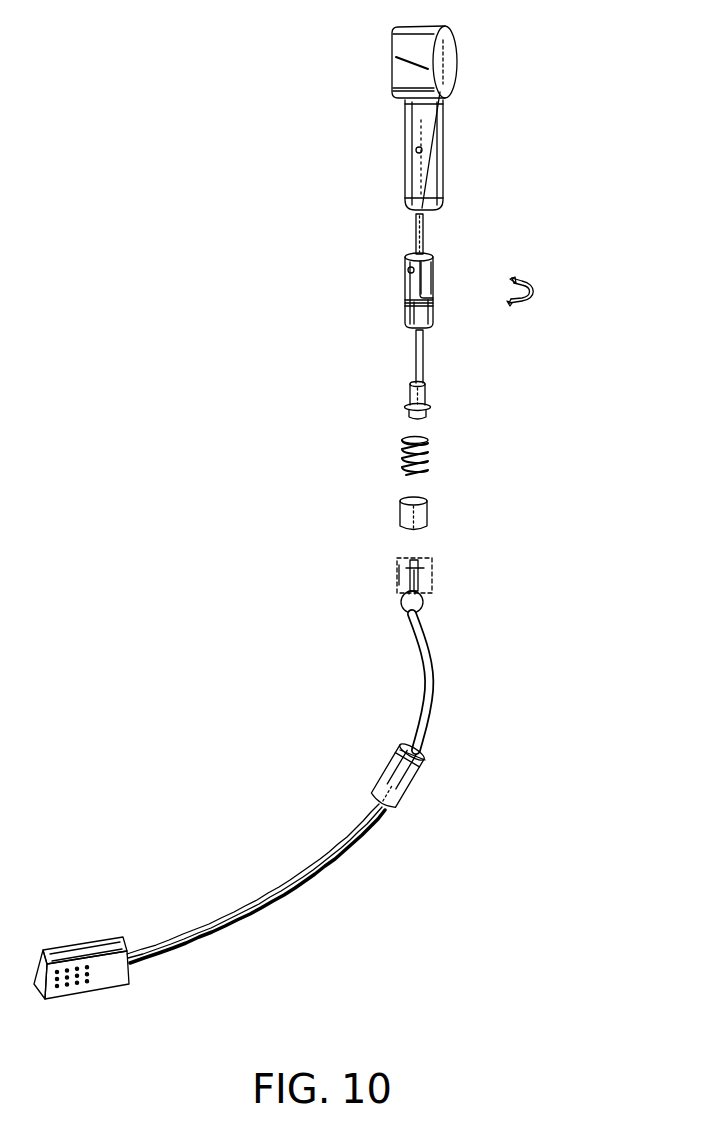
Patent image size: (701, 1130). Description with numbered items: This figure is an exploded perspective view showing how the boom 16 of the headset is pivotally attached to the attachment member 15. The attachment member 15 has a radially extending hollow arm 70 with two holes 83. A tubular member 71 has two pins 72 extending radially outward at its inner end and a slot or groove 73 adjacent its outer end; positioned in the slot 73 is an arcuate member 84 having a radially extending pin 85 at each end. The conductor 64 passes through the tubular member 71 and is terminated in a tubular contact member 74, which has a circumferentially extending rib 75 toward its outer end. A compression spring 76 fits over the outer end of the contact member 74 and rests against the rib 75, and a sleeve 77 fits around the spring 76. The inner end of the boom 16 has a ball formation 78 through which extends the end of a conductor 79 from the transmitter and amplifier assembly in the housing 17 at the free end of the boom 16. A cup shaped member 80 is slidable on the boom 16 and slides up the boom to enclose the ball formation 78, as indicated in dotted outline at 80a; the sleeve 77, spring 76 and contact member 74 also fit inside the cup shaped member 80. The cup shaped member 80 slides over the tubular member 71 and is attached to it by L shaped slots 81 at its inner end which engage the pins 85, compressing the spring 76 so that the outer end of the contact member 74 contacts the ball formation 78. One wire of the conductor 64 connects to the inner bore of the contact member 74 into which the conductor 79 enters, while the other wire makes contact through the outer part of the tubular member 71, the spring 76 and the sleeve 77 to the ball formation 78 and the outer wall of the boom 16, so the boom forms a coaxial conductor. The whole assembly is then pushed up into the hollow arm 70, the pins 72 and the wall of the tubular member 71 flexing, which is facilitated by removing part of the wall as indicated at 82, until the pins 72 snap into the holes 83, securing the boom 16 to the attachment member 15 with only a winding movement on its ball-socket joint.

The attachment member 15 is at (462, 56).
The hollow arm 70 is at (446, 114).
The holes 83 is at (415, 153).
The conductor 64 is at (428, 222).
The tubular member 71 is at (436, 307).
The pins 72 is at (434, 257).
The removed wall portion 82 is at (434, 268).
The slot 73 is at (434, 320).
The arcuate member 84 is at (541, 290).
The pins 85 is at (516, 279).
The tubular contact member 74 is at (430, 390).
The rib 75 is at (405, 409).
The compression spring 76 is at (427, 447).
The sleeve 77 is at (432, 514).
The conductor 79 is at (433, 570).
The cup shaped member in slid position 80a is at (396, 583).
The ball formation 78 is at (427, 605).
The boom 16 is at (306, 900).
The cup shaped member 80 is at (424, 789).
The L shaped slots 81 is at (398, 758).
The housing 17 is at (116, 981).